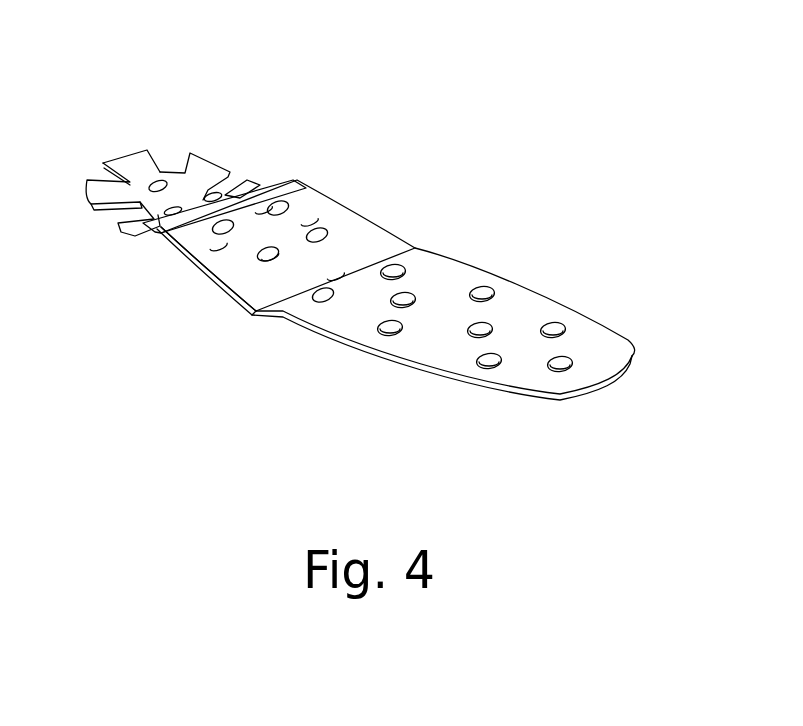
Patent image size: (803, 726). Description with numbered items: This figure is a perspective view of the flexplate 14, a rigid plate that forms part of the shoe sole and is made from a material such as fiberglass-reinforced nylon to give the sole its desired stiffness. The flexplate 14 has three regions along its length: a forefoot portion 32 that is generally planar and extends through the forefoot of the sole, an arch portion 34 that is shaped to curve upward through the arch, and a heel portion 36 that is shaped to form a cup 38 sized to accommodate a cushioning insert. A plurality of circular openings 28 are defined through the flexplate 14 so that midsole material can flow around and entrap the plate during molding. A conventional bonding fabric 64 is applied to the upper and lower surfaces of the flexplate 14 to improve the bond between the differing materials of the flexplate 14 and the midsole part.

The flexplate 14 is at (448, 193).
The circular openings 28 is at (486, 326).
The forefoot portion 32 is at (447, 345).
The arch portion 34 is at (258, 280).
The heel portion 36 is at (130, 162).
The cup 38 is at (186, 187).
The bonding fabric 64 is at (343, 228).